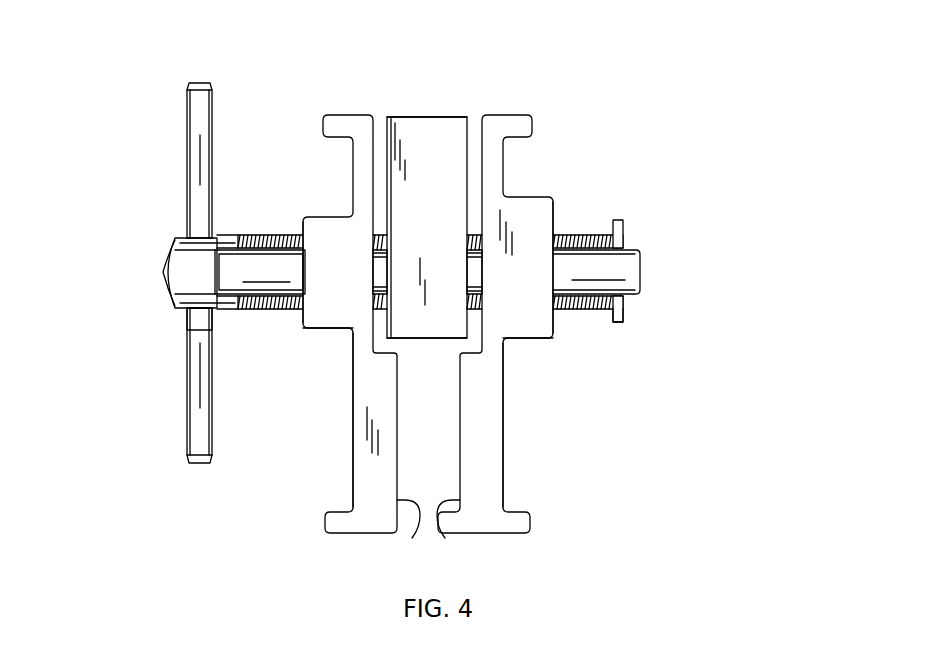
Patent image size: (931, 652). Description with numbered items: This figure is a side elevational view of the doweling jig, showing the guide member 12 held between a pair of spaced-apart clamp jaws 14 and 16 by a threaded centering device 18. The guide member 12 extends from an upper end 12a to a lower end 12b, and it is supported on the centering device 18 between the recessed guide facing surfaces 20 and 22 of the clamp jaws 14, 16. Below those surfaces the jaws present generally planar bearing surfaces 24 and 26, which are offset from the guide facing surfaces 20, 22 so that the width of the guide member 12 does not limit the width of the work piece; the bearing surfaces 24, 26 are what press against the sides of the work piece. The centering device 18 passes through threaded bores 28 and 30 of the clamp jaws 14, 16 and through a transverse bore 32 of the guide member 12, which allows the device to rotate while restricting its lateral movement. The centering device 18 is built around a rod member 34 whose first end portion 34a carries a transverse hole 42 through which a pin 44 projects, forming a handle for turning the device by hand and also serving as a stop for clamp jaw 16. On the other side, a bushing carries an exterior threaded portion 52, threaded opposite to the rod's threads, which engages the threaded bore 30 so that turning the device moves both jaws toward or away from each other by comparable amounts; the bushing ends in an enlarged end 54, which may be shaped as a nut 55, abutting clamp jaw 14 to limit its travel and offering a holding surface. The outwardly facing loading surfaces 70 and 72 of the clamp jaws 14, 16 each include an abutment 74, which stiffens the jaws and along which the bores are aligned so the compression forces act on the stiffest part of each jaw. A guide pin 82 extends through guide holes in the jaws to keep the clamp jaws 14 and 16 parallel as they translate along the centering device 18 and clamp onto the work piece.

The guide member 12 is at (468, 172).
The upper end of guide member 12a is at (407, 117).
The lower end of guide member 12b is at (408, 340).
The clamp jaw 14 is at (516, 111).
The clamp jaw 16 is at (355, 113).
The threaded centering device 18 is at (147, 275).
The guide facing surface 20 is at (470, 120).
The guide facing surface 22 is at (380, 155).
The bearing surface 24 is at (410, 534).
The bearing surface 26 is at (444, 534).
The threaded bore 28 is at (557, 228).
The threaded bore 30 is at (301, 224).
The transverse bore 32 is at (257, 235).
The rod member 34 is at (170, 250).
The first end portion of rod member 34a is at (225, 310).
The transverse hole 42 is at (190, 325).
The pin 44 is at (212, 433).
The threaded portion 52 is at (592, 232).
The enlarged end 54 is at (639, 312).
The nut 55 is at (625, 227).
The loading surface 70 is at (503, 423).
The loading surface 72 is at (353, 481).
The abutment 74 is at (300, 332).
The guide pin 82 is at (228, 268).